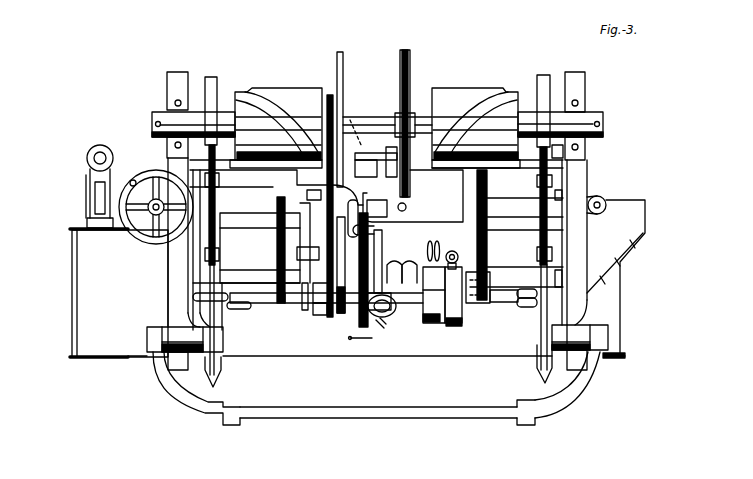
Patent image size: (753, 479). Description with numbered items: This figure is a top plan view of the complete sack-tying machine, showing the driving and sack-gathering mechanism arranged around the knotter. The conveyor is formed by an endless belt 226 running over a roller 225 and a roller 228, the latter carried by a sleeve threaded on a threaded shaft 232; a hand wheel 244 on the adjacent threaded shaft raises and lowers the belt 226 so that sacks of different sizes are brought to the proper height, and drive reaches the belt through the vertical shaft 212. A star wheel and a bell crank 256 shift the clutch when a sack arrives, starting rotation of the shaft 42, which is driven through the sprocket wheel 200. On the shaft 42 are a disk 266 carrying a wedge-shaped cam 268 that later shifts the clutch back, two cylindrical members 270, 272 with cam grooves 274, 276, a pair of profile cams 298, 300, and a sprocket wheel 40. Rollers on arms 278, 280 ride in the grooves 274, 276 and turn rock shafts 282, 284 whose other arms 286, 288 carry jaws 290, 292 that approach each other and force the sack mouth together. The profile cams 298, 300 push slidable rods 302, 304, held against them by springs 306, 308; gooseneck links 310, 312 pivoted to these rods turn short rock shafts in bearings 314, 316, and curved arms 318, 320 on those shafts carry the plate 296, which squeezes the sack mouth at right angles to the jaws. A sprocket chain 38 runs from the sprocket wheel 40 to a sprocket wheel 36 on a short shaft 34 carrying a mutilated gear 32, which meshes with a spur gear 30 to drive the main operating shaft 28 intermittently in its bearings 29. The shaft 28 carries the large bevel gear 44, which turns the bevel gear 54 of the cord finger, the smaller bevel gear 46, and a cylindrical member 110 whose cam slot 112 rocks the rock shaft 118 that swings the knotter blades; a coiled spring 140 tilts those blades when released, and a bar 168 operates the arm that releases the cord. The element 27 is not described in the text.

The profile cam 298 is at (207, 77).
The cylindrical member 270 is at (277, 100).
The disk 266 is at (342, 52).
The sprocket wheel 200 is at (410, 58).
The cam groove 274 is at (247, 92).
The sprocket wheel 40 is at (330, 95).
The cylindrical member 272 is at (465, 97).
The cam groove 276 is at (510, 92).
The profile cam 300 is at (543, 80).
The shaft 42 is at (423, 113).
The wedge-shaped cam 268 is at (368, 153).
The vertical shaft 212 is at (92, 152).
The slidable rod 302 is at (165, 150).
The slidable rod 304 is at (545, 161).
The threaded shaft 232 is at (606, 200).
The hand wheel 244 is at (86, 212).
The spring 306 is at (200, 237).
The arm 278 is at (292, 171).
The sprocket chain 38 is at (328, 198).
The pin 27 is at (354, 200).
The arm 280 is at (452, 169).
The bell crank 256 is at (407, 205).
The coiled spring 140 is at (432, 241).
The rock shaft 282 is at (273, 222).
The short shaft 34 is at (297, 250).
The sprocket wheel 36 is at (295, 268).
The bar 168 is at (379, 243).
The main operating shaft 28 is at (378, 290).
The rock shaft 118 is at (453, 251).
The rock shaft 284 is at (488, 245).
The spring 308 is at (592, 240).
The bearing 314 is at (182, 330).
The bearing 316 is at (585, 322).
The jaw 290 is at (235, 283).
The arm 286 is at (263, 297).
The mutilated gear 32 is at (332, 292).
The spur gear 30 is at (341, 314).
The bearings 29 is at (318, 309).
The large bevel gear 44 is at (358, 325).
The smaller bevel gear 46 is at (378, 328).
The bevel gear 54 is at (392, 320).
The jaw 292 is at (505, 288).
The arm 288 is at (496, 304).
The cylindrical member 110 is at (438, 325).
The cam slot 112 is at (456, 328).
The roller 225 is at (110, 358).
The endless belt 226 is at (268, 357).
The gooseneck link 310 is at (212, 376).
The curved arm 318 is at (215, 406).
The plate 296 is at (410, 419).
The gooseneck link 312 is at (550, 378).
The curved arm 320 is at (548, 398).
The roller 228 is at (606, 358).